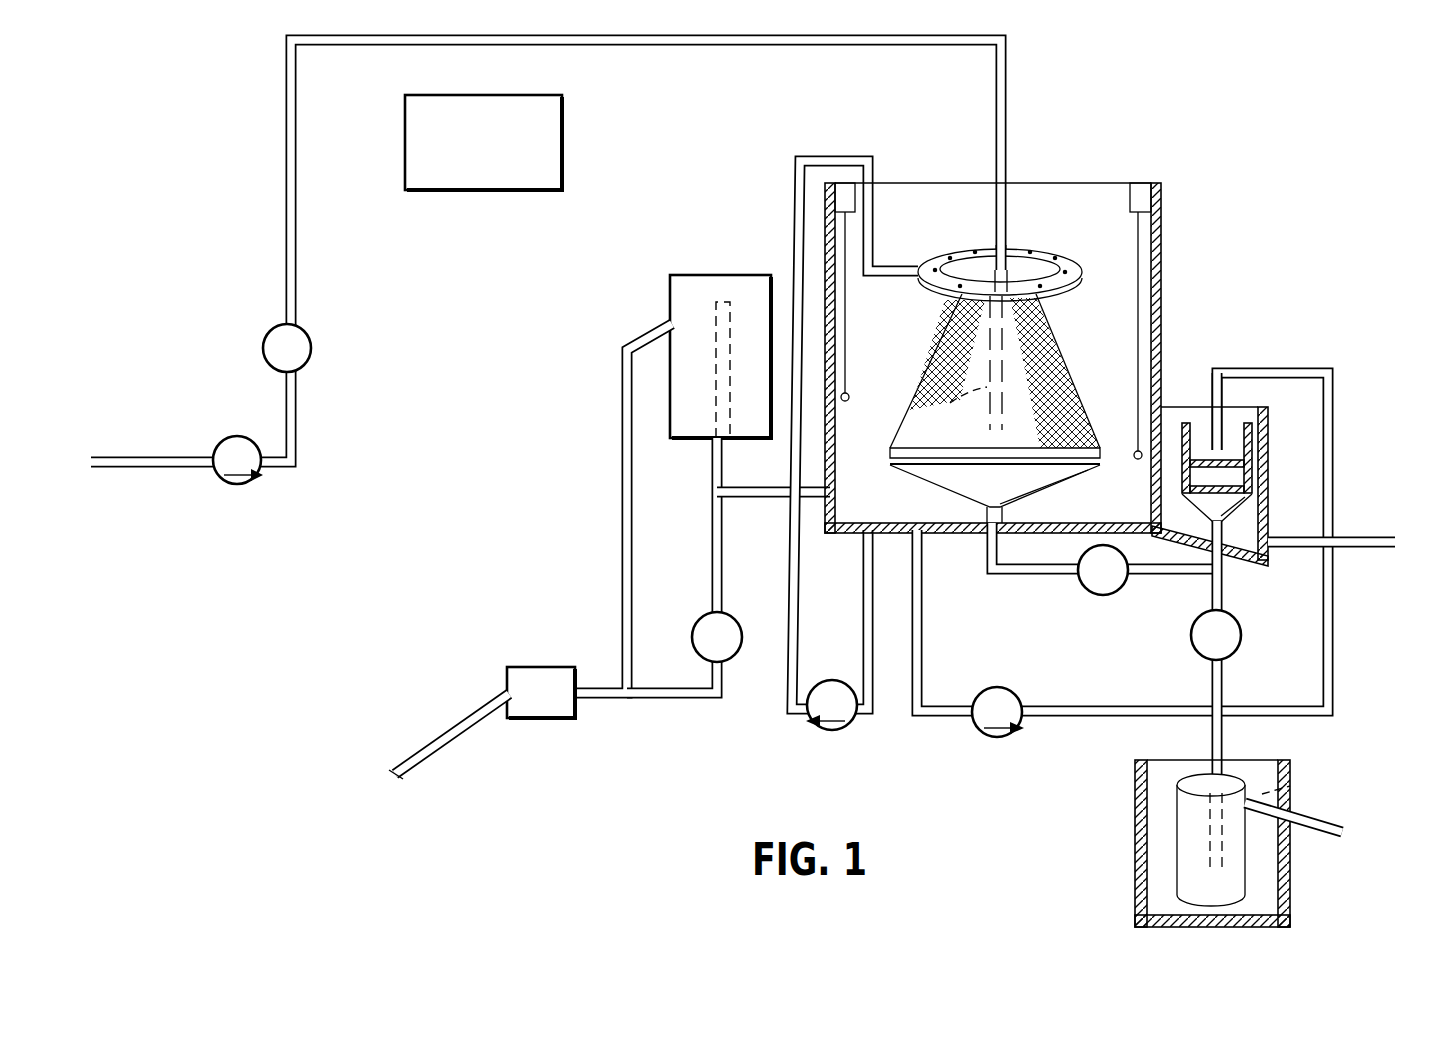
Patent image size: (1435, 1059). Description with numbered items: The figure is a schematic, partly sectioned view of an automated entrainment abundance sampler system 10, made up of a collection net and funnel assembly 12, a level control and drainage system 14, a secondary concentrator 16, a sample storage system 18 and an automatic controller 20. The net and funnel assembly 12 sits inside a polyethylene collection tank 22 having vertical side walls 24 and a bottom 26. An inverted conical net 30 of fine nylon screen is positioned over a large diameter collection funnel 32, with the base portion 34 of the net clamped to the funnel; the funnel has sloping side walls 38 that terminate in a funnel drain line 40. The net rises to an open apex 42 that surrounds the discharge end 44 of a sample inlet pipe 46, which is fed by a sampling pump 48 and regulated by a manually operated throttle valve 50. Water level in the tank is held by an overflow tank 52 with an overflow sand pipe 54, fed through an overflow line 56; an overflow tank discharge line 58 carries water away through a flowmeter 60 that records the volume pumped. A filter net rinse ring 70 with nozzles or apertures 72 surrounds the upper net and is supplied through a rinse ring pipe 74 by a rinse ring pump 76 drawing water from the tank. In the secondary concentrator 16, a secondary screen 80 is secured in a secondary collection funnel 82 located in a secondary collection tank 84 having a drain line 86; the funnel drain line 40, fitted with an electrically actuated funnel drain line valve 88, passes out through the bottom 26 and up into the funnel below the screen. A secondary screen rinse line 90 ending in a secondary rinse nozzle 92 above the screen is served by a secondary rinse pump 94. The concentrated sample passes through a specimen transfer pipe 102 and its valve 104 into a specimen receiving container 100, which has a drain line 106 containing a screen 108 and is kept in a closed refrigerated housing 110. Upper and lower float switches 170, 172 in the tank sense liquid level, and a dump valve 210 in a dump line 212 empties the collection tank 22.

The automated entrainment abundance sampler system 10 is at (680, 777).
The collection net and funnel assembly 12 is at (990, 363).
The level control and drainage system 14 is at (686, 333).
The secondary concentrator 16 is at (1164, 570).
The sample storage system 18 is at (1257, 850).
The automatic controller 20 is at (473, 196).
The collection tank 22 is at (1022, 358).
The side walls 24 is at (1163, 338).
The bottom 26 is at (933, 545).
The conical net 30 is at (920, 374).
The collection funnel 32 is at (910, 482).
The base portion 34 is at (1095, 465).
The sloping side walls 38 is at (1050, 488).
The funnel drain line 40 is at (1002, 517).
The open apex 42 is at (1005, 262).
The discharge end 44 is at (964, 363).
The sample inlet pipe 46 is at (1008, 110).
The sampling pump 48 is at (243, 484).
The throttle valve 50 is at (311, 347).
The overflow tank 52 is at (670, 283).
The overflow sand pipe 54 is at (733, 318).
The overflow line 56 is at (750, 500).
The overflow tank discharge line 58 is at (624, 458).
The flowmeter 60 is at (545, 673).
The filter net rinse ring 70 is at (1015, 253).
The nozzles or apertures 72 is at (936, 265).
The rinse ring pipe 74 is at (805, 578).
The rinse ring pump 76 is at (831, 731).
The secondary screen 80 is at (1230, 470).
The secondary collection funnel 82 is at (1252, 445).
The secondary collection tank 84 is at (1268, 420).
The drain line 86 is at (1368, 540).
The funnel drain line valve 88 is at (1103, 595).
The secondary screen rinse line 90 is at (1335, 375).
The secondary rinse nozzle 92 is at (1211, 445).
The secondary rinse pump 94 is at (993, 737).
The specimen receiving container 100 is at (1245, 870).
The specimen transfer pipe 102 is at (1223, 688).
The specimen transfer pipe valve 104 is at (1239, 630).
The drain line 106 is at (1336, 826).
The screen 108 is at (1290, 777).
The refrigerated housing 110 is at (1290, 925).
The upper float switch 170 is at (848, 402).
The lower float switch 172 is at (1136, 460).
The collection container dump valve 210 is at (735, 620).
The dump line 212 is at (712, 555).